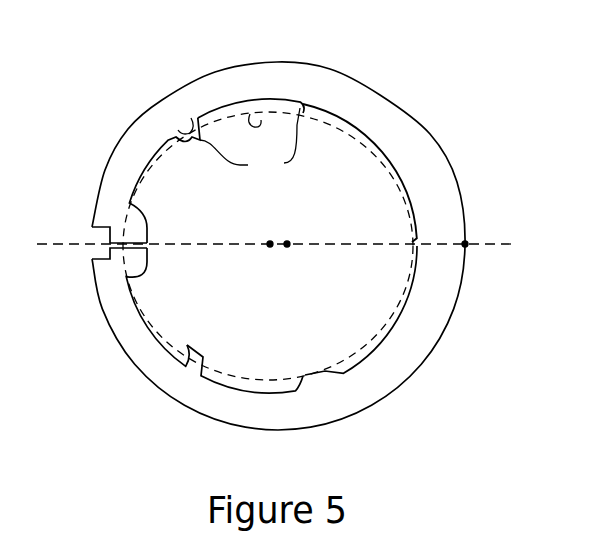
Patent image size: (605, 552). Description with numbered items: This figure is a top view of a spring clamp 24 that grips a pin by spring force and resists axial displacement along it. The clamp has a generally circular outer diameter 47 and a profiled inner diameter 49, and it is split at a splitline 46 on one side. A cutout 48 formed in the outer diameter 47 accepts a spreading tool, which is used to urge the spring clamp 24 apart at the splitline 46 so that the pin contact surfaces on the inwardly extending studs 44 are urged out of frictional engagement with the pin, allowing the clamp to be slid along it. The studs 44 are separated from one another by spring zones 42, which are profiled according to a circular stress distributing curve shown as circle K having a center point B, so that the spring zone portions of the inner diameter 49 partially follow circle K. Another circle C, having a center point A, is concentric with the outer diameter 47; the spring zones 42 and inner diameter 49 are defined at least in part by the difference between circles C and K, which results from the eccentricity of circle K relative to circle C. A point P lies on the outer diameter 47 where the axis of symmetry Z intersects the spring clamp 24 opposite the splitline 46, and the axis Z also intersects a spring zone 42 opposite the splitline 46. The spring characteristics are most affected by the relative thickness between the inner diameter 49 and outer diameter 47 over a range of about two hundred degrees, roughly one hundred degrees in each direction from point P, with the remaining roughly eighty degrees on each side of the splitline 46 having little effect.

The spring clamp 24 is at (289, 219).
The spring zones 42 is at (404, 228).
The inwardly extending studs 44 is at (251, 138).
The splitline 46 is at (150, 248).
The outer diameter 47 is at (432, 142).
The cutout 48 is at (94, 262).
The inner diameter 49 is at (401, 195).
The circle K is at (178, 130).
The circle C is at (261, 120).
The center point B is at (268, 243).
The center point A is at (288, 246).
The point P is at (466, 247).
The axis of symmetry Z is at (489, 244).